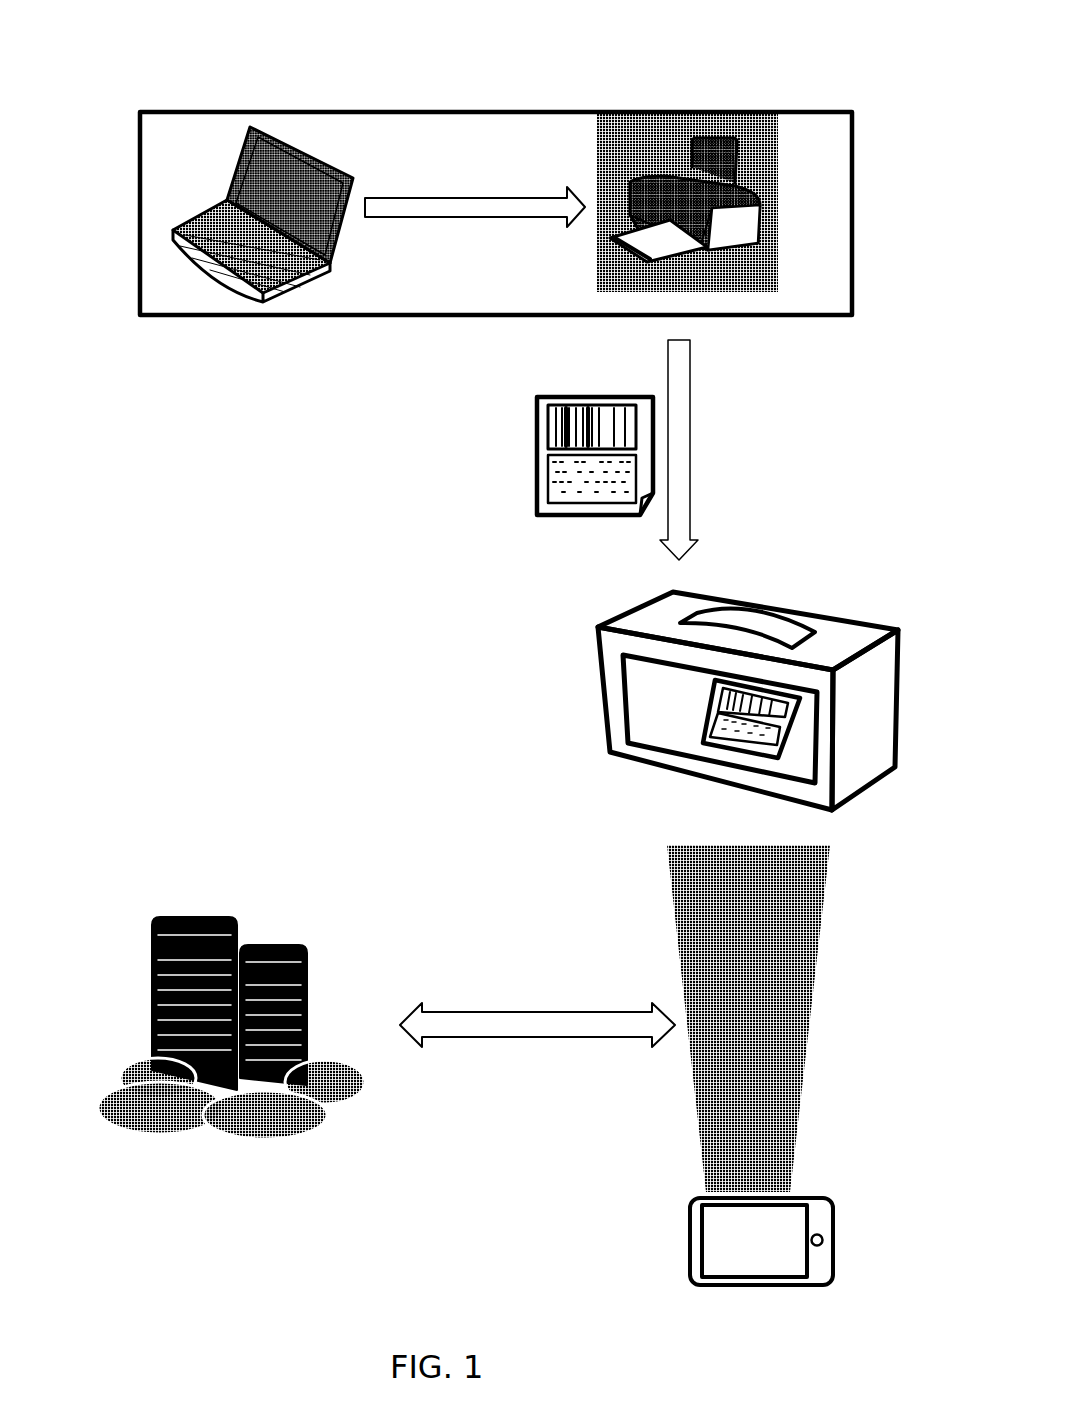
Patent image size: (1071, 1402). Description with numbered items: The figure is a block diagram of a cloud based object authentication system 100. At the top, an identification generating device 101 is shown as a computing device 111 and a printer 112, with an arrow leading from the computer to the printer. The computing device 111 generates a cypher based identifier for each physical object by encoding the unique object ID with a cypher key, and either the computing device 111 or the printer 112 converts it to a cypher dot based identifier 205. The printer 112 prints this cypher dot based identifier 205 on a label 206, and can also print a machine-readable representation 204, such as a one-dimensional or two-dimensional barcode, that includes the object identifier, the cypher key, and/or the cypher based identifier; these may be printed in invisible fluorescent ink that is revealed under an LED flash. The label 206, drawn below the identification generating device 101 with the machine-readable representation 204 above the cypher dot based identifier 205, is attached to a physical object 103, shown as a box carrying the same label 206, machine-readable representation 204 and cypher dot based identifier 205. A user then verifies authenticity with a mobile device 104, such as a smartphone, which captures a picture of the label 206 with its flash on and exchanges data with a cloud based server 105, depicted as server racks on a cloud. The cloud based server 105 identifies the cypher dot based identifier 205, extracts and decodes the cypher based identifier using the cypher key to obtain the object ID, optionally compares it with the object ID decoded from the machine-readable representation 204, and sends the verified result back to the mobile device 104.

The cloud based object authentication system 100 is at (728, 51).
The identification generating device 101 is at (138, 225).
The computing device 111 is at (328, 132).
The printer 112 is at (720, 128).
The physical object 103 is at (717, 593).
The label 206 is at (548, 400).
The machine-readable representation 204 is at (548, 428).
The cypher dot based identifier 205 is at (548, 479).
The cloud based server 105 is at (265, 918).
The mobile device 104 is at (817, 1192).